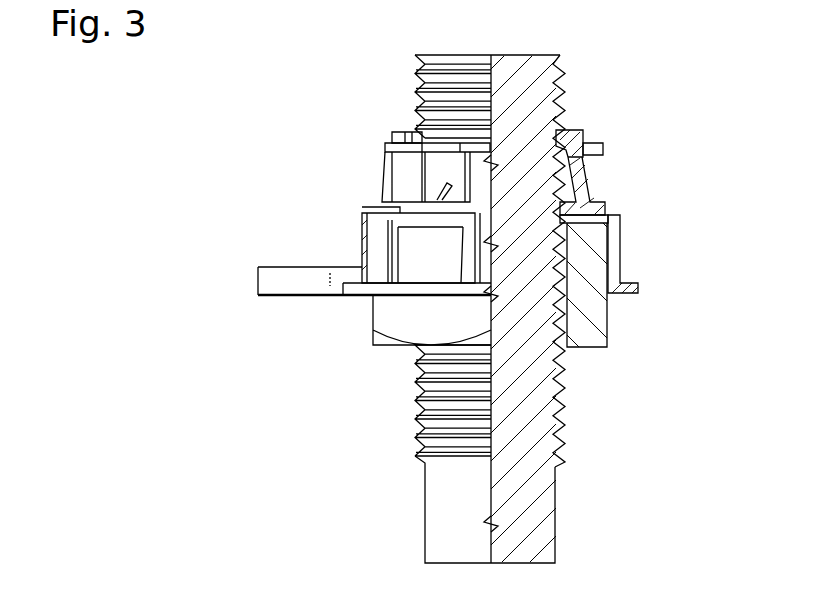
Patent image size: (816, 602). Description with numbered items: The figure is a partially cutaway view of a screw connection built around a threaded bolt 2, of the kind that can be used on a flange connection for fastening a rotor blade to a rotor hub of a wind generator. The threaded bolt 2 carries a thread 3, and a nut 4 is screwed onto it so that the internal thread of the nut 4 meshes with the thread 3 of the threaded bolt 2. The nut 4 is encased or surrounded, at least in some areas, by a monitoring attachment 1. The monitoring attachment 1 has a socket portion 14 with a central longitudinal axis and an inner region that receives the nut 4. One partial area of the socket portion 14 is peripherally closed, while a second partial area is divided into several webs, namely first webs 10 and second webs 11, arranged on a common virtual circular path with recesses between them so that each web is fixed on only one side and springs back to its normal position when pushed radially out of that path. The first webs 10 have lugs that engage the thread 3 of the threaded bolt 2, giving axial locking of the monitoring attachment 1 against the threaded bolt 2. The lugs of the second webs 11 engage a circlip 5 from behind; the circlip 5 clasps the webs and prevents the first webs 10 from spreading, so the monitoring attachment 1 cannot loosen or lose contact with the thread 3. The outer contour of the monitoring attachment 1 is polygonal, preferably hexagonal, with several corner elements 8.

The monitoring attachment 1 is at (632, 279).
The threaded bolt 2 is at (523, 507).
The thread 3 is at (415, 68).
The nut 4 is at (593, 322).
The circlip 5 is at (388, 148).
The corner elements 8 is at (373, 248).
The first webs 10 is at (572, 137).
The second webs 11 is at (392, 135).
The socket portion 14 is at (248, 198).